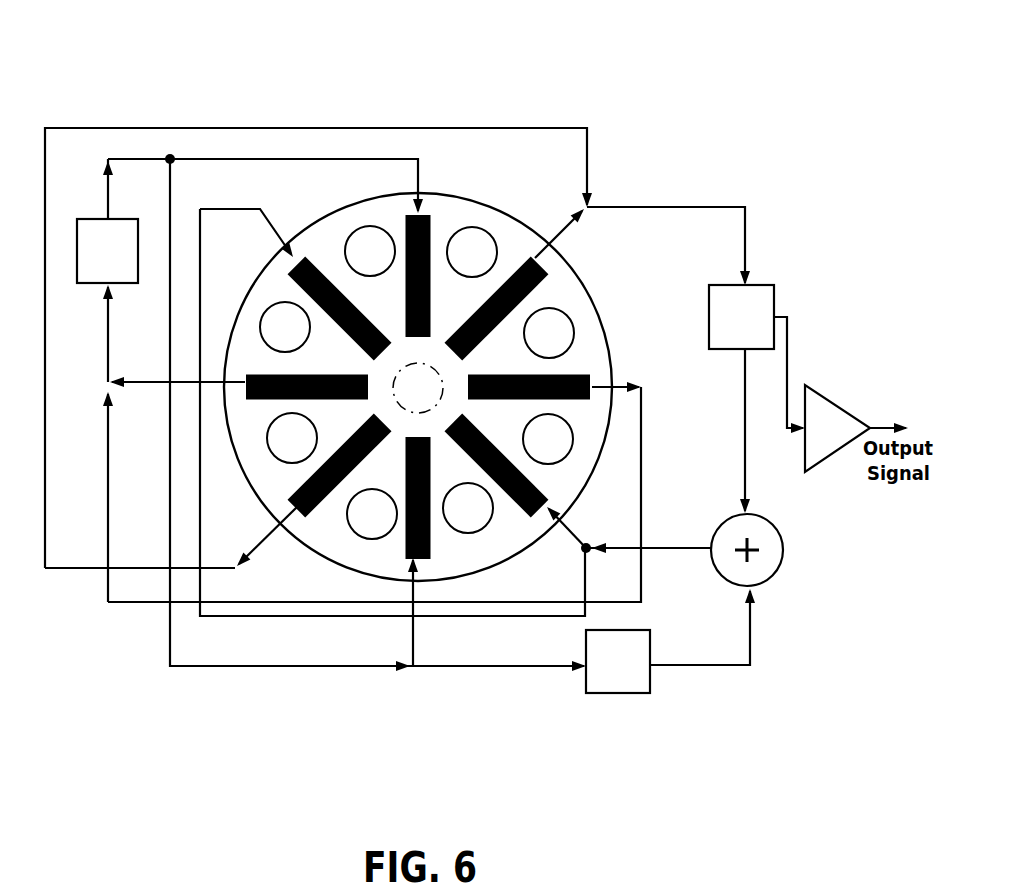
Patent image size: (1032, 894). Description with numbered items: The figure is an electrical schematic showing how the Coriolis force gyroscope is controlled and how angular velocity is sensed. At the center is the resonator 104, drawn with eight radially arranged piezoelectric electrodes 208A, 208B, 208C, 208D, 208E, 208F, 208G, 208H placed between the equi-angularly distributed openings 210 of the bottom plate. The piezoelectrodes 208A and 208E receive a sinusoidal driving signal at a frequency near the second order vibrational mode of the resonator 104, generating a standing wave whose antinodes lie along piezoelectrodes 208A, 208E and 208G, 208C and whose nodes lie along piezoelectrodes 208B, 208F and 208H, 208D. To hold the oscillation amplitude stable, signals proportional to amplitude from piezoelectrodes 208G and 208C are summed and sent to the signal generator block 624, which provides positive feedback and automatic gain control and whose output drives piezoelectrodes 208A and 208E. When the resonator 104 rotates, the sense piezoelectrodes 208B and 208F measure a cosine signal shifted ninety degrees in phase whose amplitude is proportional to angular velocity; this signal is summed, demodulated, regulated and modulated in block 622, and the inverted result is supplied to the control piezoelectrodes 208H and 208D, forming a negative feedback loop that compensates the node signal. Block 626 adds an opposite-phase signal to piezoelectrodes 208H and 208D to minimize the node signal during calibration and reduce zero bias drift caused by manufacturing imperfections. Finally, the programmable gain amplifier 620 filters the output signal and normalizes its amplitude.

The resonator body 104 is at (517, 220).
The piezoelectric electrode 208A is at (428, 213).
The piezoelectric electrode 208B is at (534, 260).
The piezoelectric electrode 208C is at (594, 372).
The piezoelectric electrode 208D is at (525, 495).
The piezoelectric electrode 208E is at (410, 545).
The piezoelectric electrode 208F is at (302, 515).
The piezoelectric electrode 208G is at (265, 394).
The piezoelectric electrode 208H is at (325, 263).
The opening 210 is at (363, 522).
The programmable gain amplifier 620 is at (833, 410).
The block 622 is at (741, 317).
The signal generator block 624 is at (107, 251).
The block 626 is at (618, 661).